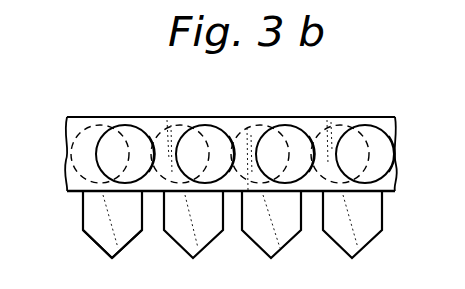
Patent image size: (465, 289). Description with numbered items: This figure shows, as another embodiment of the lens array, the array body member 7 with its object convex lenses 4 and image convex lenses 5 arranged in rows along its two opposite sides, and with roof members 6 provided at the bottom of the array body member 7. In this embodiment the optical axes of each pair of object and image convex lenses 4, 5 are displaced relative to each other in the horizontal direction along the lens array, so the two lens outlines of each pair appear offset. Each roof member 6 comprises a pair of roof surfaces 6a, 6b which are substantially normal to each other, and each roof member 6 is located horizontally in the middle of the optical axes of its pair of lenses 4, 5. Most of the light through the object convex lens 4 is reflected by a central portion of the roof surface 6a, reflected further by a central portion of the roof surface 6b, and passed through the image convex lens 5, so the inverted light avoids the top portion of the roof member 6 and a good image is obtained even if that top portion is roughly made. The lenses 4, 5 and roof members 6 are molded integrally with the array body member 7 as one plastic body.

The object convex lens 4 is at (68, 153).
The image convex lens 5 is at (132, 128).
The roof member 6 is at (92, 232).
The roof surface 6a is at (102, 249).
The roof surface 6b is at (129, 246).
The array body member 7 is at (77, 124).